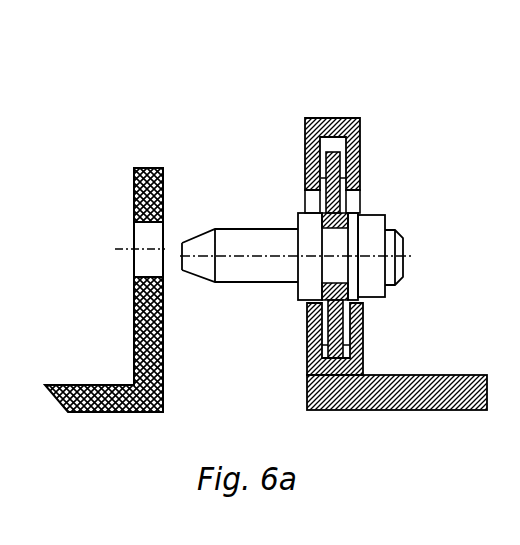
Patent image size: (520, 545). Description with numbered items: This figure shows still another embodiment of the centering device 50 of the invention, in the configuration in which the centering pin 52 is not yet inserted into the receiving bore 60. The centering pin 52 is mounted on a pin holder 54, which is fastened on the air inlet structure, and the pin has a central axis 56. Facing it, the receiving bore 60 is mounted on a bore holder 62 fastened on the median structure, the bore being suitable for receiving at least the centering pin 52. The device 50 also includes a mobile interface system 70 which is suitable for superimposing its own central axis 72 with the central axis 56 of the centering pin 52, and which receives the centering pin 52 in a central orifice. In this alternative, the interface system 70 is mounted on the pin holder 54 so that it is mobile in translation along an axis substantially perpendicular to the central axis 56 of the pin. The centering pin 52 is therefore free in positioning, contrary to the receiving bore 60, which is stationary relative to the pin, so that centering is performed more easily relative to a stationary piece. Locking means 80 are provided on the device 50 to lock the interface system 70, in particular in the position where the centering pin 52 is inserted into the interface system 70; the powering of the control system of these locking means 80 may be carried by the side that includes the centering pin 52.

The device 50 is at (323, 114).
The centering pin 52 is at (246, 268).
The pin holder 54 is at (361, 128).
The central axis 56 is at (281, 252).
The receiving bore 60 is at (152, 261).
The bore holder 62 is at (134, 172).
The mobile interface system 70 is at (337, 216).
The central axis 72 is at (115, 249).
The locking means 80 is at (343, 162).